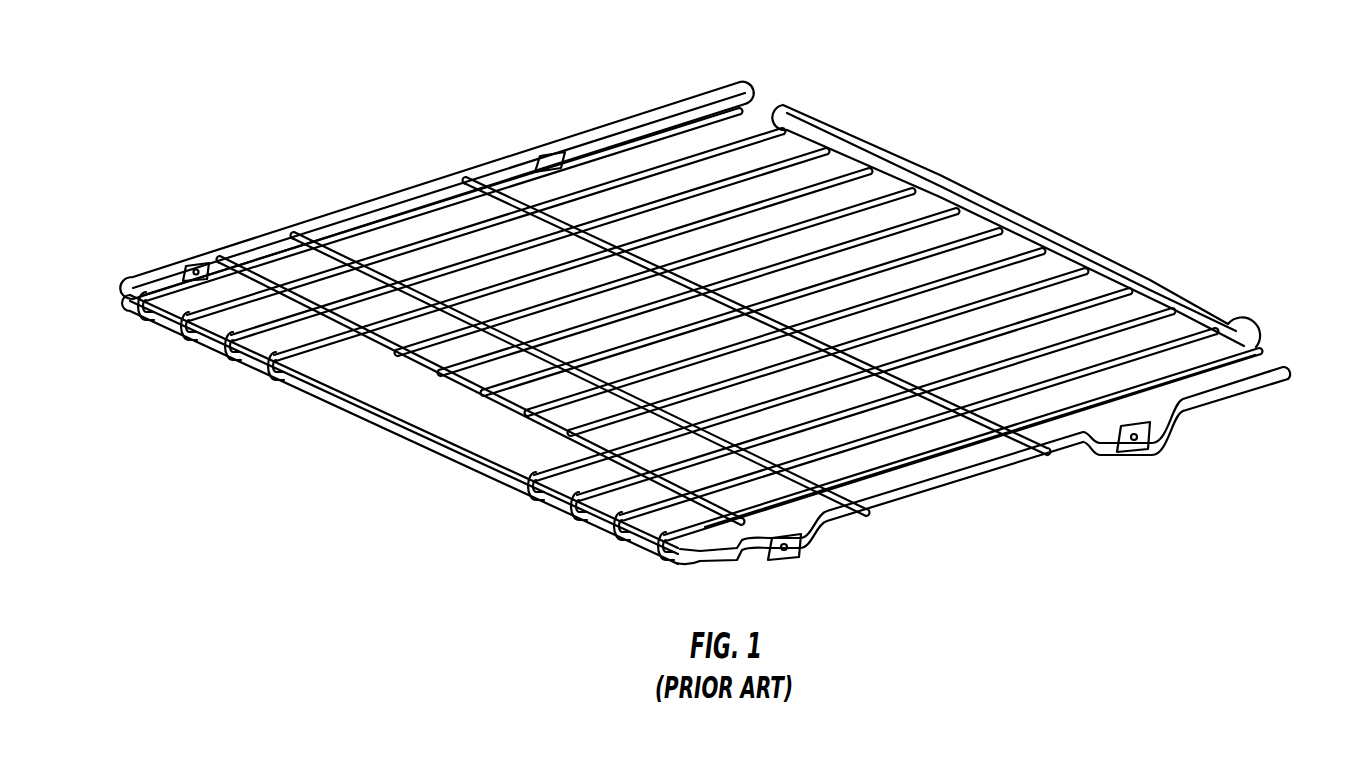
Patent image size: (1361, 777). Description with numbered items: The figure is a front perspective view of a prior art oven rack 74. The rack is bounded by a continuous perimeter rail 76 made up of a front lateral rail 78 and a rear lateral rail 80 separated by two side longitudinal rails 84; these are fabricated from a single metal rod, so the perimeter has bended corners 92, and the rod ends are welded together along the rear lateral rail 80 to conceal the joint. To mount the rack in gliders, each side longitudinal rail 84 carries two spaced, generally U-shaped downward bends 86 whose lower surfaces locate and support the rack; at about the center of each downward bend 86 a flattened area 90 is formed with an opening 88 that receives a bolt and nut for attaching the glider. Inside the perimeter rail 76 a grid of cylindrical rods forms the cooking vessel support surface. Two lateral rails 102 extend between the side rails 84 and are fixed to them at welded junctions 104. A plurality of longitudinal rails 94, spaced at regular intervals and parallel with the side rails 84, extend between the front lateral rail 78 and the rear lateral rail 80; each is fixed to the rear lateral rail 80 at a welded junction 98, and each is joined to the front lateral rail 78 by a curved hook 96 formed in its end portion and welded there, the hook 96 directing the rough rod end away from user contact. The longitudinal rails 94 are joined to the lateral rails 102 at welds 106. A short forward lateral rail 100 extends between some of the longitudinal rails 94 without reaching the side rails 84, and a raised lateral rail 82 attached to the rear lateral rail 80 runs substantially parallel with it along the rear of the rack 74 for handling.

The oven rack 74 is at (549, 118).
The continuous perimeter rail 76 is at (347, 426).
The front lateral rail 78 is at (453, 445).
The rear lateral rail 80 is at (757, 123).
The raised lateral rail 82 is at (922, 173).
The side longitudinal rail 84 is at (972, 478).
The U-shaped downward bend 86 is at (1100, 455).
The opening 88 is at (1140, 450).
The flattened area 90 is at (1148, 438).
The bended corner 92 is at (1292, 381).
The longitudinal rail 94 is at (427, 243).
The curved hook 96 is at (265, 378).
The welded junction 98 is at (740, 105).
The short forward lateral rail 100 is at (273, 300).
The lateral rail 102 is at (823, 468).
The welded junction 104 is at (290, 235).
The weld 106 is at (363, 260).